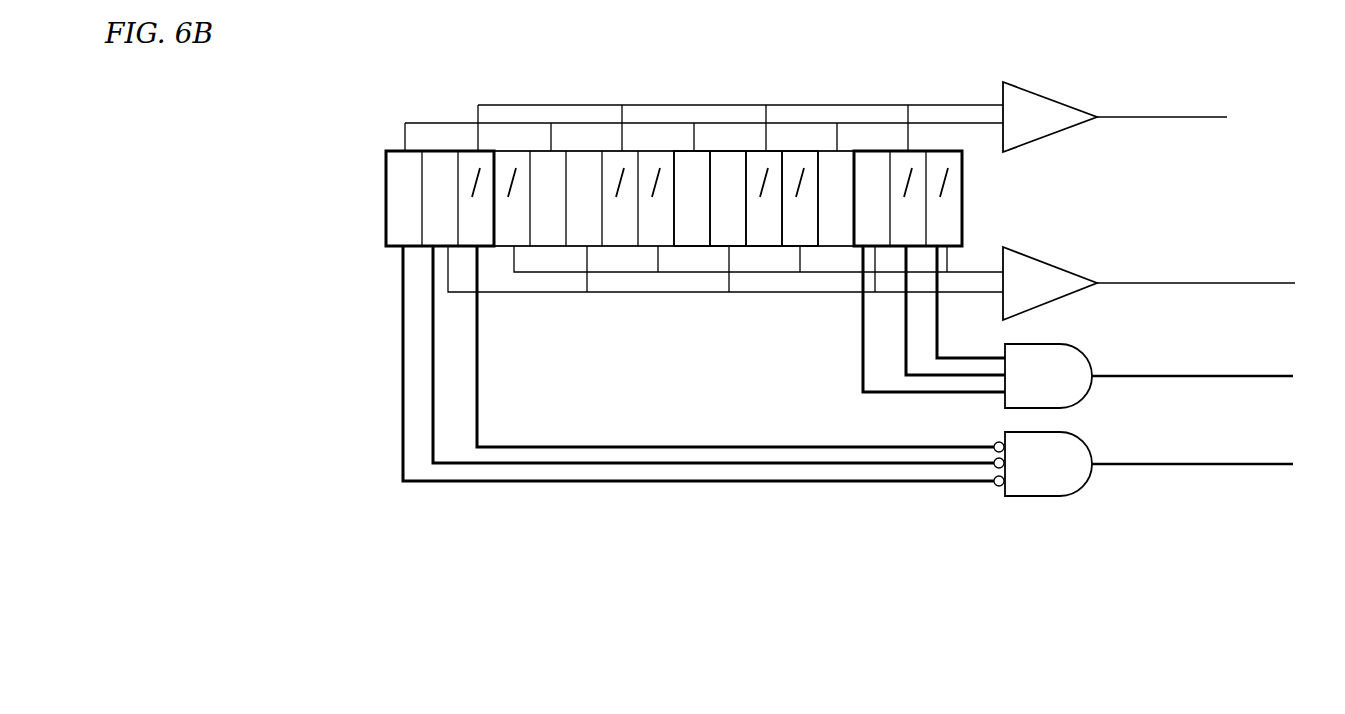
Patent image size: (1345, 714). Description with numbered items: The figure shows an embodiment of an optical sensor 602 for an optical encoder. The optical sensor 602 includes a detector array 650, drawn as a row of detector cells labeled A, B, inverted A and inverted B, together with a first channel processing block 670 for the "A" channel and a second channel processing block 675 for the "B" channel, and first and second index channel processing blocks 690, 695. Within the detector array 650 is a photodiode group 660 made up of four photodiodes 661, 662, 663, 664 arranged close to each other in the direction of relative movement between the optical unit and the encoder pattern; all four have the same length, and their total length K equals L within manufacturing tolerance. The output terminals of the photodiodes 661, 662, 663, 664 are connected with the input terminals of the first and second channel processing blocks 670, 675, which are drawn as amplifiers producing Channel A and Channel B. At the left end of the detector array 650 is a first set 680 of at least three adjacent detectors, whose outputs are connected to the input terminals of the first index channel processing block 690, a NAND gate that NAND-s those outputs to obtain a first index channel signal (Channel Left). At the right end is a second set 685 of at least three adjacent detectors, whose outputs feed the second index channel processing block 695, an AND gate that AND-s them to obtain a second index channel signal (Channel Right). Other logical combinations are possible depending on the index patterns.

The optical sensor 602 is at (350, 81).
The detector array 650 is at (346, 198).
The photodiode group 660 is at (802, 315).
The photodiode 661 is at (690, 165).
The photodiode 662 is at (719, 165).
The photodiode 663 is at (754, 162).
The photodiode 664 is at (797, 160).
The first channel processing block 670 is at (1040, 94).
The second channel processing block 675 is at (1040, 259).
The first set of at least three adjacent detectors 680 is at (495, 91).
The second set of at least three adjacent detectors 685 is at (962, 90).
The first index channel processing block 690 is at (1083, 435).
The second index channel processing block 695 is at (1082, 346).